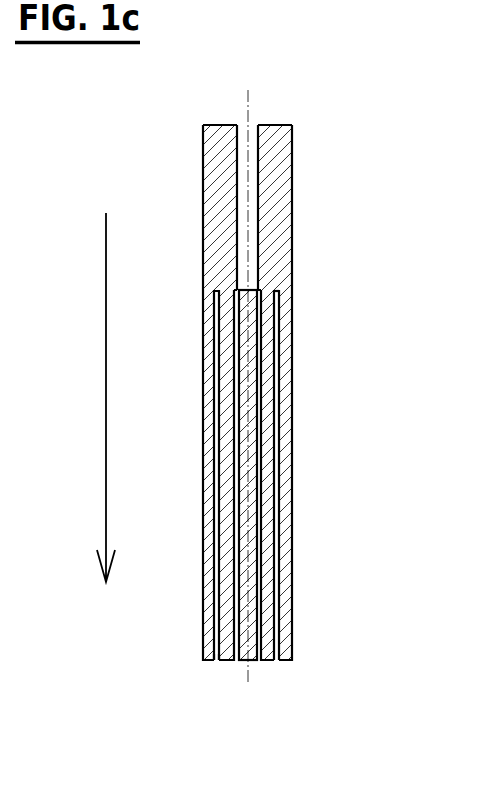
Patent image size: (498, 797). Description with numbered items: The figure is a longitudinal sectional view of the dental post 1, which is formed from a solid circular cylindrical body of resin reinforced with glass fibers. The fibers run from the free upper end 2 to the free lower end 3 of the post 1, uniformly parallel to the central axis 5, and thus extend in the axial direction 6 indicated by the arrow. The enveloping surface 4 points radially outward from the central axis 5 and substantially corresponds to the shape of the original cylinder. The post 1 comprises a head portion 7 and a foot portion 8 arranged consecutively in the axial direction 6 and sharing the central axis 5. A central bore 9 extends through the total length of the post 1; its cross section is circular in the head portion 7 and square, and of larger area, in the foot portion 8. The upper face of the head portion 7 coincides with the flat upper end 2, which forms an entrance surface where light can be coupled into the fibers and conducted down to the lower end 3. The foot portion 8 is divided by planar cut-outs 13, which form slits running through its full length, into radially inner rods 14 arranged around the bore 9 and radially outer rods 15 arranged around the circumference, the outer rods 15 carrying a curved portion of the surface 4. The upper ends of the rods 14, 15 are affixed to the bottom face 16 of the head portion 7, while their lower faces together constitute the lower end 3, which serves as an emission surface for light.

The dental post 1 is at (316, 104).
The free upper end 2 is at (222, 125).
The free lower end 3 is at (248, 660).
The enveloping surface 4 is at (203, 406).
The central axis 5 is at (247, 107).
The axial direction 6 is at (106, 405).
The head portion 7 is at (278, 223).
The foot portion 8 is at (211, 447).
The central bore 9 is at (238, 110).
The planar cut-outs 13 is at (215, 672).
The radially inner rods 14 is at (236, 636).
The radially outer rods 15 is at (208, 520).
The bottom face 16 is at (280, 290).